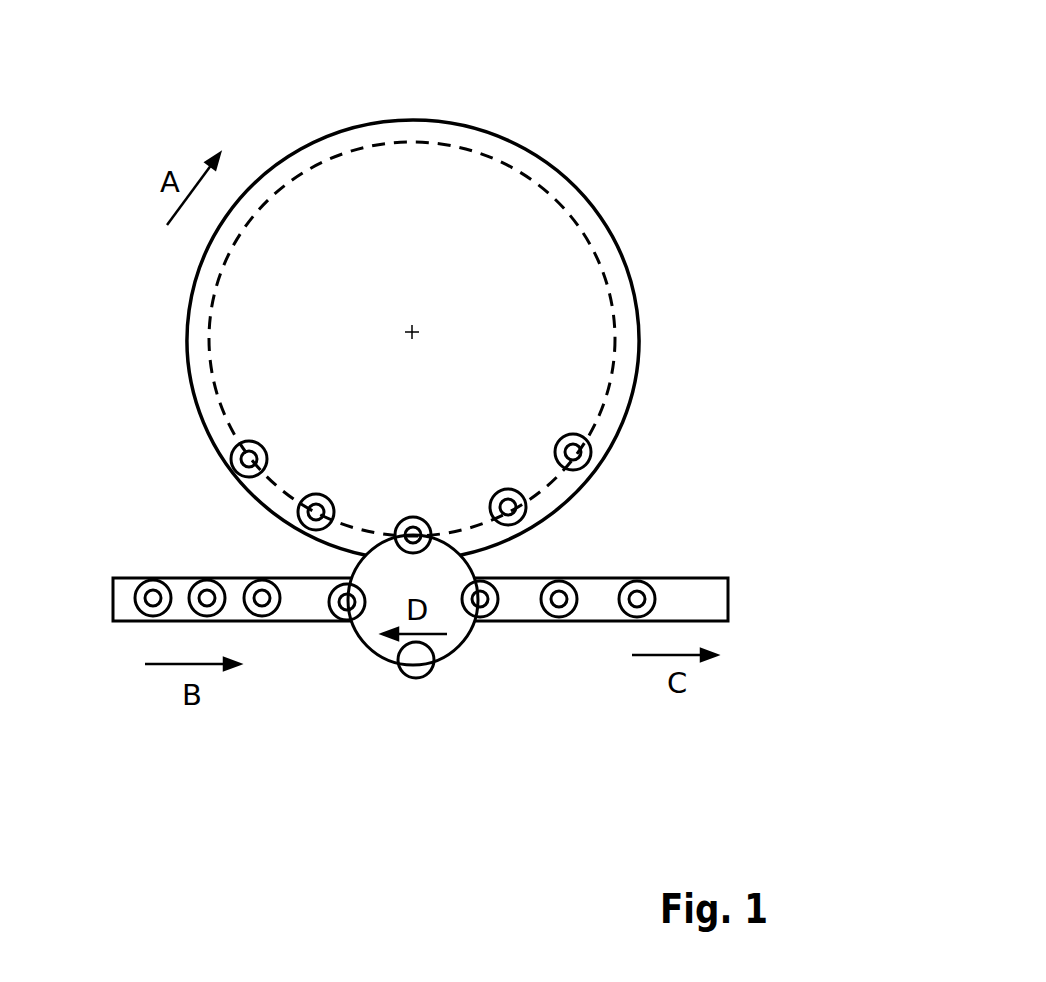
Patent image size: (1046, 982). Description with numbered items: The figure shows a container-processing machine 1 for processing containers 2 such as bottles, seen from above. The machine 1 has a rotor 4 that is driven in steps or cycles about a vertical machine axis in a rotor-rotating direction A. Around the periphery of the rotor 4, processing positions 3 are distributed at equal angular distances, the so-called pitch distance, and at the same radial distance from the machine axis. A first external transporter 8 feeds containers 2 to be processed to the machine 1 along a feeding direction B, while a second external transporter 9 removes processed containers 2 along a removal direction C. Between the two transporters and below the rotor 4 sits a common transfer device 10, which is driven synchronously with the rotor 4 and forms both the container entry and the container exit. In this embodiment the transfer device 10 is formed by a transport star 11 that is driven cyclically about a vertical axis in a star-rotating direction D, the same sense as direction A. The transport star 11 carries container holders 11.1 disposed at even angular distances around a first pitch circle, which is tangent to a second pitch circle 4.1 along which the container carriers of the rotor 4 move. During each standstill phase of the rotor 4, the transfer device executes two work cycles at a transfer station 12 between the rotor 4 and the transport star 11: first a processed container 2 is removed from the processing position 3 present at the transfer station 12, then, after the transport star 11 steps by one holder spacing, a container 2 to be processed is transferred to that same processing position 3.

The container-processing machine 1 is at (591, 116).
The containers 2 is at (247, 578).
The processing positions 3 is at (602, 467).
The rotor 4 is at (512, 260).
The second pitch circle 4.1 is at (425, 135).
The first external transporter 8 is at (113, 620).
The second external transporter 9 is at (717, 595).
The common transfer device 10 is at (477, 693).
The transport star 11 is at (372, 637).
The container holders 11.1 is at (416, 660).
The transfer station 12 is at (434, 495).